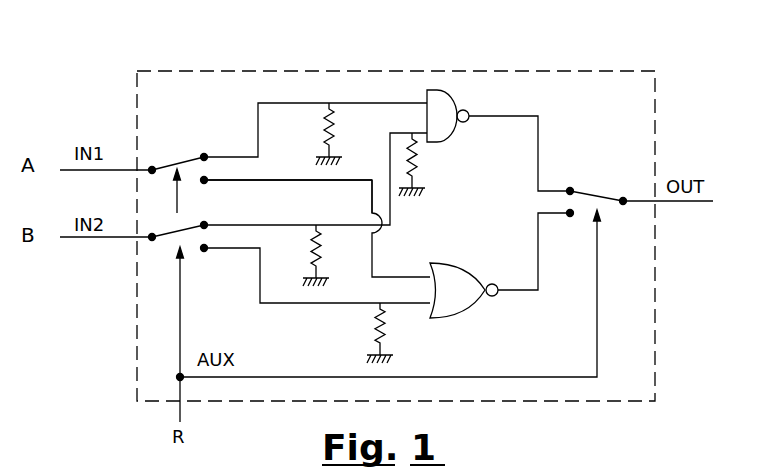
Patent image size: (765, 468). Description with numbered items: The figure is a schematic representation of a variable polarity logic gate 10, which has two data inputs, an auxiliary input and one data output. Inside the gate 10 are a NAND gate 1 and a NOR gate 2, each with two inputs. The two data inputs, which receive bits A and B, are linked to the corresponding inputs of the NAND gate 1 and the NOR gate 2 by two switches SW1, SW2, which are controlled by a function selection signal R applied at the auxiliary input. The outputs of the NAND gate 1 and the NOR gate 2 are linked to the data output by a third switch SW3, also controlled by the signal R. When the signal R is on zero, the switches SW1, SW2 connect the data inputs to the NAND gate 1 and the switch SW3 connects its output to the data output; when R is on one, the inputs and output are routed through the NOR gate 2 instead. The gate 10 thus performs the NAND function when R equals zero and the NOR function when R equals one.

The variable polarity logic gate 10 is at (580, 71).
The NAND gate 1 is at (456, 125).
The NOR gate 2 is at (458, 264).
The first switch SW1 is at (183, 158).
The second switch SW2 is at (165, 240).
The third switch SW3 is at (590, 194).